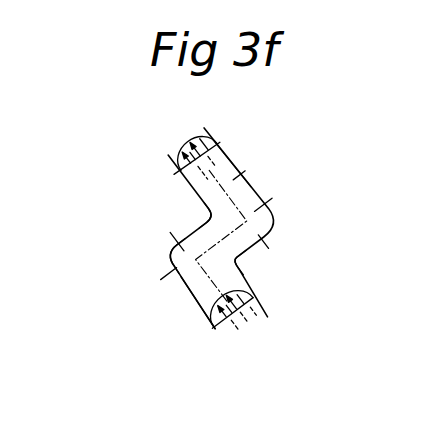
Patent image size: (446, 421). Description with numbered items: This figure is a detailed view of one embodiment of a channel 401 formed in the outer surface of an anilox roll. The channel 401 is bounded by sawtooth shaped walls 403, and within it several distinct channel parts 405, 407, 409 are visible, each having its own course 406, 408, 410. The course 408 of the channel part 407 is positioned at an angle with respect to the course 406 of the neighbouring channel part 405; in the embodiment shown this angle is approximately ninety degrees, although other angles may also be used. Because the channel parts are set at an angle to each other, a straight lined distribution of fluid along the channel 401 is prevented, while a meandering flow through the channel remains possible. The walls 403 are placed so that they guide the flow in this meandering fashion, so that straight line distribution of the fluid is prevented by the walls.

The channel 401 is at (166, 227).
The sawtooth shaped wall 403 is at (246, 251).
The channel part 405 is at (190, 292).
The course 406 is at (250, 328).
The channel part 407 is at (204, 224).
The course 408 is at (271, 199).
The channel part 409 is at (185, 145).
The course 410 is at (238, 176).